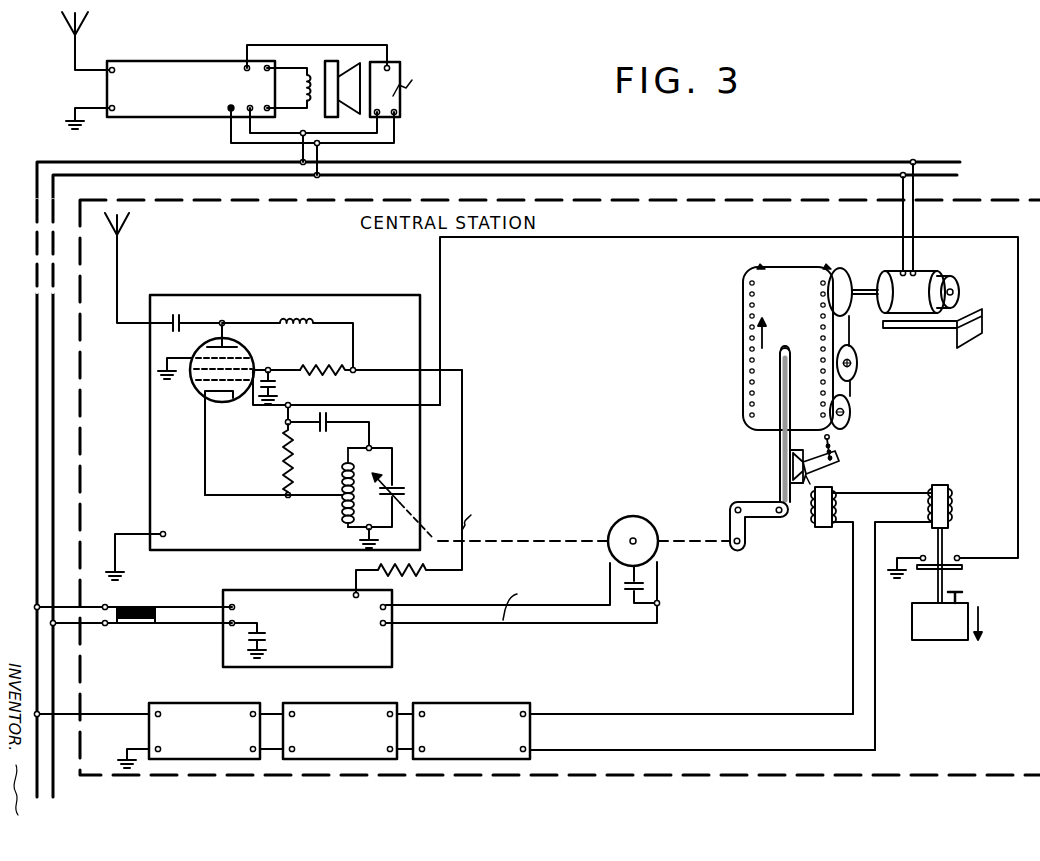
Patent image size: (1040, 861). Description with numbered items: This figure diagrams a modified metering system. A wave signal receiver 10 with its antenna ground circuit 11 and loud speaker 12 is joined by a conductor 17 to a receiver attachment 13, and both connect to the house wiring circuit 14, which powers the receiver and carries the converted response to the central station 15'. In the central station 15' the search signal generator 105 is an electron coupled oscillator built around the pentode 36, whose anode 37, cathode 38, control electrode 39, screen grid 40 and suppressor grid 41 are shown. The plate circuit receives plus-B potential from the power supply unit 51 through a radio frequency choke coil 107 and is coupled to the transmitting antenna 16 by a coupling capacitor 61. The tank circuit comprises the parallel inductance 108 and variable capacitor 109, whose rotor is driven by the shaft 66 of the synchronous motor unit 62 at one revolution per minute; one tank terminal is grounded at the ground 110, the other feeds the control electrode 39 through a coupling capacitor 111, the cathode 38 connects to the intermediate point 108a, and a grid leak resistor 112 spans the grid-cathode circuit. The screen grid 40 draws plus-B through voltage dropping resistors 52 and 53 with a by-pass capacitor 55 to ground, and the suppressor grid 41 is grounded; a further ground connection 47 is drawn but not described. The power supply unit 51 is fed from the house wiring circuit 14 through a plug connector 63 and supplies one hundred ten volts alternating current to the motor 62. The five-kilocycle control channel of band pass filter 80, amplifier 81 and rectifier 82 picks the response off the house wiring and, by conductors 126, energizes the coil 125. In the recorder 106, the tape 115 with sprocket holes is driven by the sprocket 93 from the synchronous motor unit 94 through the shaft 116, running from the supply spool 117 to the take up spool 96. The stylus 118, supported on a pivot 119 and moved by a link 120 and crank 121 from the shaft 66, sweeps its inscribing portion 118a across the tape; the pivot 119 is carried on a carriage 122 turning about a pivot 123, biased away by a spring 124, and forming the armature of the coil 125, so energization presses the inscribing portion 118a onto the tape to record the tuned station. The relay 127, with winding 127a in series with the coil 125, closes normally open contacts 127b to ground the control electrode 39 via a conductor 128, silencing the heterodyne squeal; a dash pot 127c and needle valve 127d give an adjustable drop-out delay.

The wave signal receiver 10 is at (152, 63).
The antenna ground circuit 11 is at (85, 75).
The loud speaker 12 is at (333, 60).
The receiver attachment 13 is at (393, 67).
The house wiring circuit 14 is at (483, 175).
The central station 15' is at (560, 466).
The transmitting antenna 16 is at (119, 275).
The conductor 17 is at (279, 45).
The pentode 36 is at (242, 362).
The anode 37 is at (226, 344).
The cathode 38 is at (221, 404).
The control electrode 39 is at (198, 394).
The screen grid 40 is at (246, 371).
The suppressor grid 41 is at (192, 356).
The ground terminal 47 is at (133, 531).
The power supply unit 51 is at (270, 597).
The voltage dropping resistor 52 is at (424, 575).
The voltage dropping resistor 53 is at (307, 364).
The capacitor 55 is at (276, 383).
The coupling capacitor 61 is at (197, 315).
The synchronous motor and gear train unit 62 is at (625, 522).
The plug connector 63 is at (135, 606).
The shaft 66 is at (556, 541).
The 5 kc. band pass filter 80 is at (182, 710).
The amplifier 81 is at (316, 714).
The rectifier 82 is at (459, 708).
The sprocket 93 is at (841, 283).
The synchronous motor and gear train unit 94 is at (916, 275).
The take up spool 96 is at (857, 362).
The search signal generator 105 is at (296, 271).
The recorder 106 is at (809, 263).
The radio frequency choke coil 107 is at (306, 321).
The inductance 108 is at (340, 464).
The intermediate point 108a is at (342, 498).
The variable capacitor 109 is at (391, 485).
The ground 110 is at (364, 540).
The coupling capacitor 111 is at (326, 413).
The grid leak resistor 112 is at (284, 452).
The recording element 115 is at (741, 298).
The shaft 116 is at (860, 298).
The tape supply spool 117 is at (848, 398).
The stylus 118 is at (778, 371).
The inscribing portion 118a is at (784, 346).
The pivot 119 is at (788, 466).
The link 120 is at (747, 504).
The crank 121 is at (729, 524).
The movable carriage 122 is at (837, 454).
The pivot 123 is at (810, 484).
The spring 124 is at (820, 438).
The coil 125 is at (834, 507).
The conductors 126 is at (677, 747).
The relay 127 is at (950, 520).
The winding 127a is at (947, 500).
The normally open contacts 127b is at (926, 557).
The dash pot 127c is at (960, 632).
The needle valve 127d is at (962, 593).
The conductor 128 is at (692, 236).